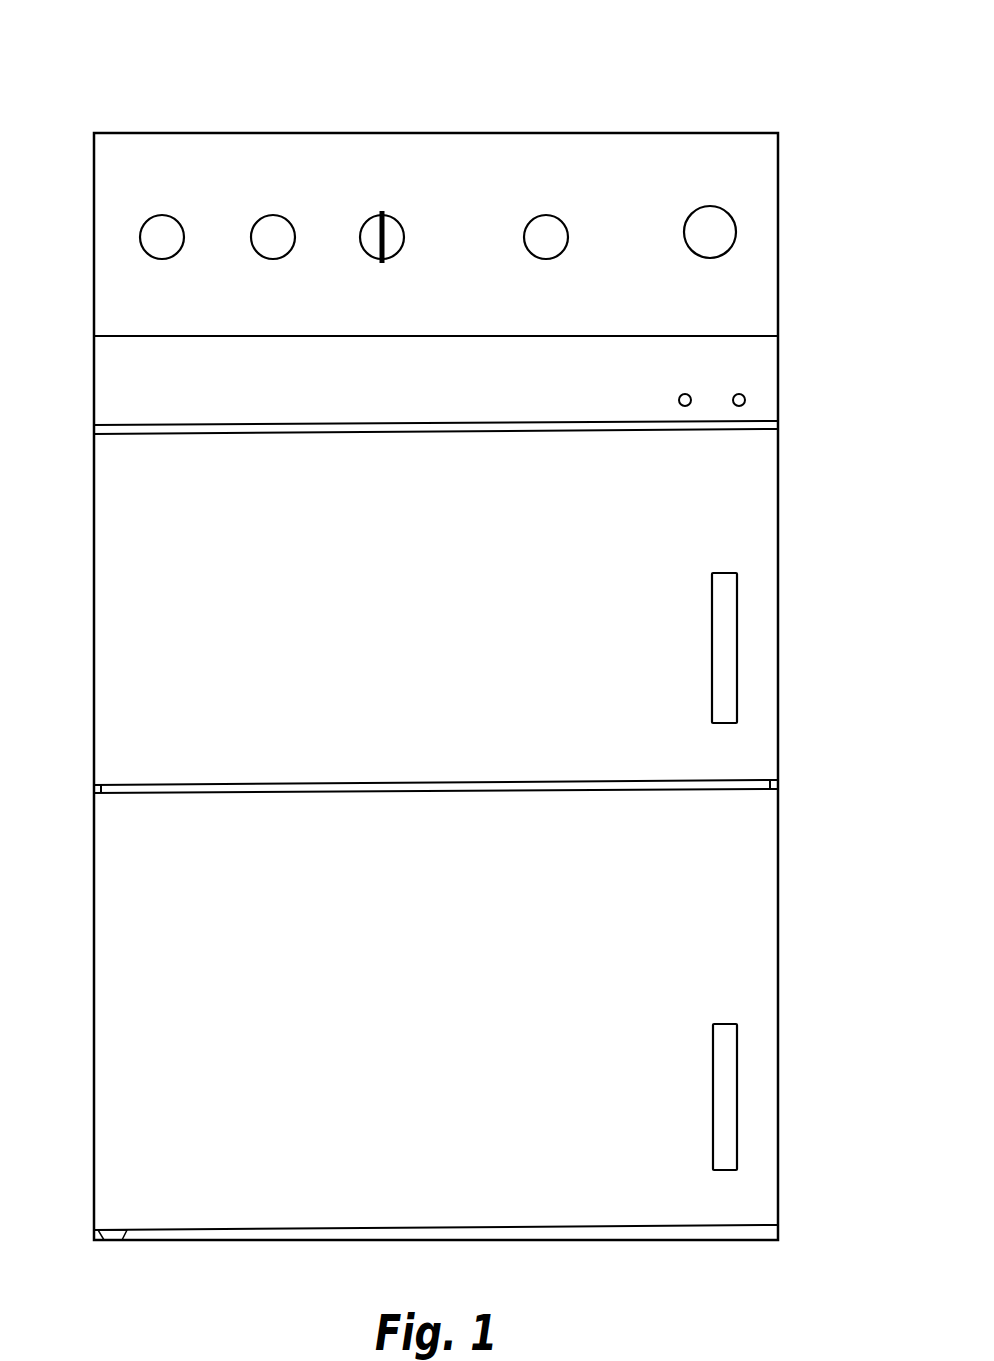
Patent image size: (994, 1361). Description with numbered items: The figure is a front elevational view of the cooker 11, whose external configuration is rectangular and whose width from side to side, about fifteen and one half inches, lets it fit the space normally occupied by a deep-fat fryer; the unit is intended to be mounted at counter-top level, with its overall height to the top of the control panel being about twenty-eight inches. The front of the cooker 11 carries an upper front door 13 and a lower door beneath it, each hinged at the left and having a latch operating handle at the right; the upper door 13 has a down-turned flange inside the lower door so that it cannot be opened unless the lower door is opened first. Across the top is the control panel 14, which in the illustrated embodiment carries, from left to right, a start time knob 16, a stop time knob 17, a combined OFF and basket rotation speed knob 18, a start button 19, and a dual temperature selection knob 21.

The cooker 11 is at (828, 118).
The upper front door 13 is at (428, 629).
The control panel 14 is at (315, 175).
The start time knob 16 is at (148, 252).
The stop time knob 17 is at (253, 247).
The combined OFF and basket rotation speed knob 18 is at (400, 231).
The start button 19 is at (563, 222).
The dual temperature selection knob 21 is at (684, 213).